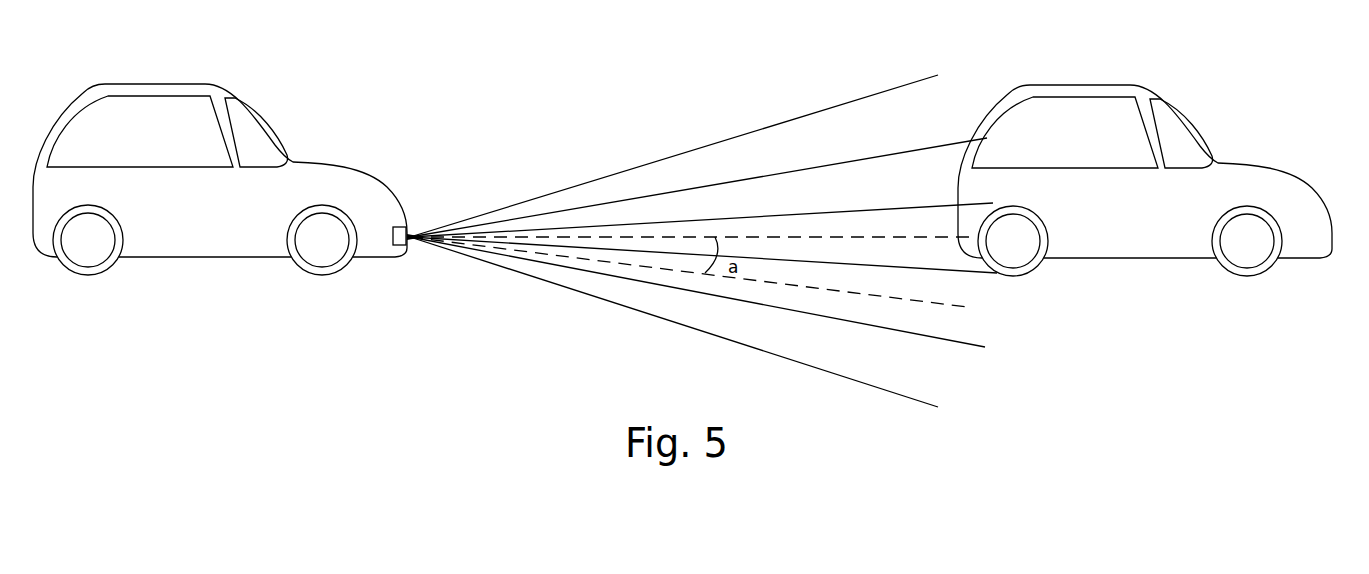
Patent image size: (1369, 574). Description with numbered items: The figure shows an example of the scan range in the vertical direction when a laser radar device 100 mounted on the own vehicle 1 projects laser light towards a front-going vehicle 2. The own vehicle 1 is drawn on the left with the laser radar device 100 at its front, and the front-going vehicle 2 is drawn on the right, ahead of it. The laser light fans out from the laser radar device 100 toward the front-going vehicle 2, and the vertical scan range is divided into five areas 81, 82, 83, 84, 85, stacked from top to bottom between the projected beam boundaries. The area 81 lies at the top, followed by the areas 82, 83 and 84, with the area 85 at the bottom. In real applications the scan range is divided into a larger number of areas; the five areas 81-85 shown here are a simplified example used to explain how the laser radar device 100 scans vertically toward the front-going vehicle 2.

The own vehicle 1 is at (195, 257).
The front-going vehicle 2 is at (1298, 258).
The laser radar device 100 is at (407, 247).
The area 81 is at (698, 156).
The area 82 is at (701, 206).
The area 83 is at (690, 237).
The area 84 is at (703, 272).
The area 85 is at (697, 322).